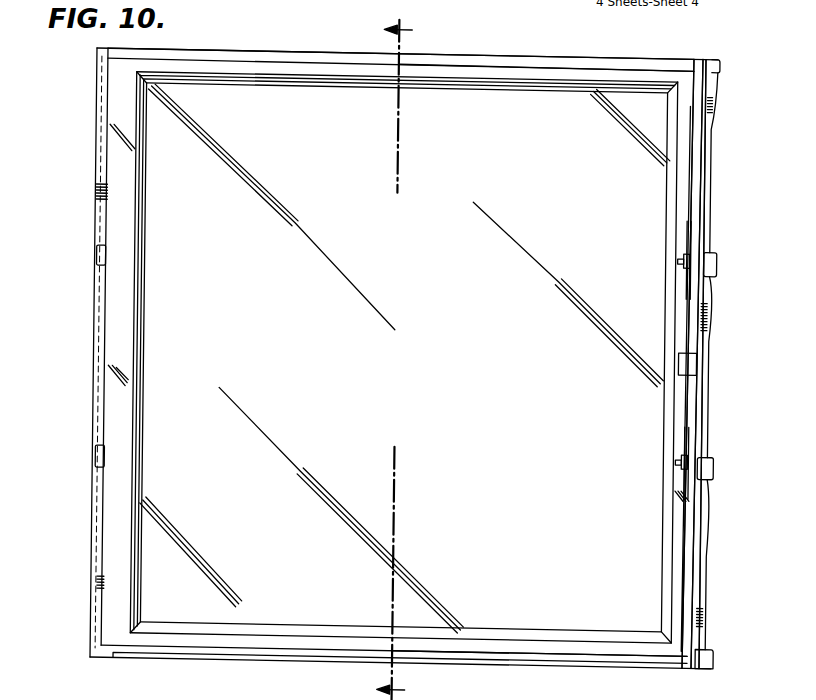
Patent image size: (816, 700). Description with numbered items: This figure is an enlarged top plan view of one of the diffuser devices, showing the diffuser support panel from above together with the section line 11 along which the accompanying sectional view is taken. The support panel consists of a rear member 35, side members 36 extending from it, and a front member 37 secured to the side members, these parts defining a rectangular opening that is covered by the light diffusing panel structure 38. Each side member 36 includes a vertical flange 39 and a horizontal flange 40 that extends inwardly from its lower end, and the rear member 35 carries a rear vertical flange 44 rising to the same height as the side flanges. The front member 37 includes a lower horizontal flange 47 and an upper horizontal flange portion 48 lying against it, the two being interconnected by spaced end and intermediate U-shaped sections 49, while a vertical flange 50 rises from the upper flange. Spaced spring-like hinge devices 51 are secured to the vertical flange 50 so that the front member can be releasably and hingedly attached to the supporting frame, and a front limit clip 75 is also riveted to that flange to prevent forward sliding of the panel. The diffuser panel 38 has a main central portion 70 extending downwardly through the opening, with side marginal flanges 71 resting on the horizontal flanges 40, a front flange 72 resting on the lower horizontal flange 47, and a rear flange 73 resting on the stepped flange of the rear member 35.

The section line 11 is at (390, 352).
The rear member 35 is at (97, 347).
The side members 36 is at (511, 57).
The front member 37 is at (705, 140).
The light diffusing panel structure 38 is at (406, 368).
The vertical flange 39 is at (258, 40).
The horizontal flange 40 is at (305, 57).
The vertical flange 44 is at (107, 255).
The lower horizontal flange 47 is at (711, 242).
The upper horizontal flange portion 48 is at (710, 200).
The U-shaped sections 49 is at (722, 70).
The vertical flange 50 is at (699, 322).
The spring-like hinge devices 51 is at (683, 262).
The main central portion 70 is at (577, 622).
The side marginal flanges 71 is at (600, 72).
The front flange 72 is at (686, 536).
The rear flange 73 is at (112, 388).
The front limit clip 75 is at (698, 358).